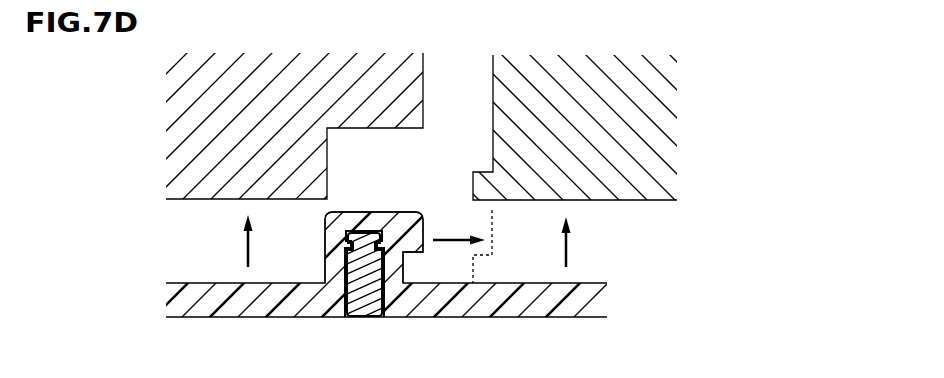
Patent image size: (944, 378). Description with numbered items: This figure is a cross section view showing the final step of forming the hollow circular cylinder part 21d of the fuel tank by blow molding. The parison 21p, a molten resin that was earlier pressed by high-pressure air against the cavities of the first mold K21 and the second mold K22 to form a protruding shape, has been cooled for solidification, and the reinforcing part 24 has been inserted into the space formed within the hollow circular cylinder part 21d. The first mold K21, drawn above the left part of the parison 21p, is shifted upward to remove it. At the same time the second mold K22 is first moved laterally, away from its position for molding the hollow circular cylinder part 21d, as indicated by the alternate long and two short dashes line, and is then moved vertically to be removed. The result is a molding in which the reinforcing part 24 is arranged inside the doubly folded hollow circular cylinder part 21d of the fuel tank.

The first mold K21 is at (306, 115).
The second mold K22 is at (573, 110).
The hollow circular cylinder part 21d is at (383, 210).
The parison 21p is at (533, 293).
The reinforcing part 24 is at (364, 292).